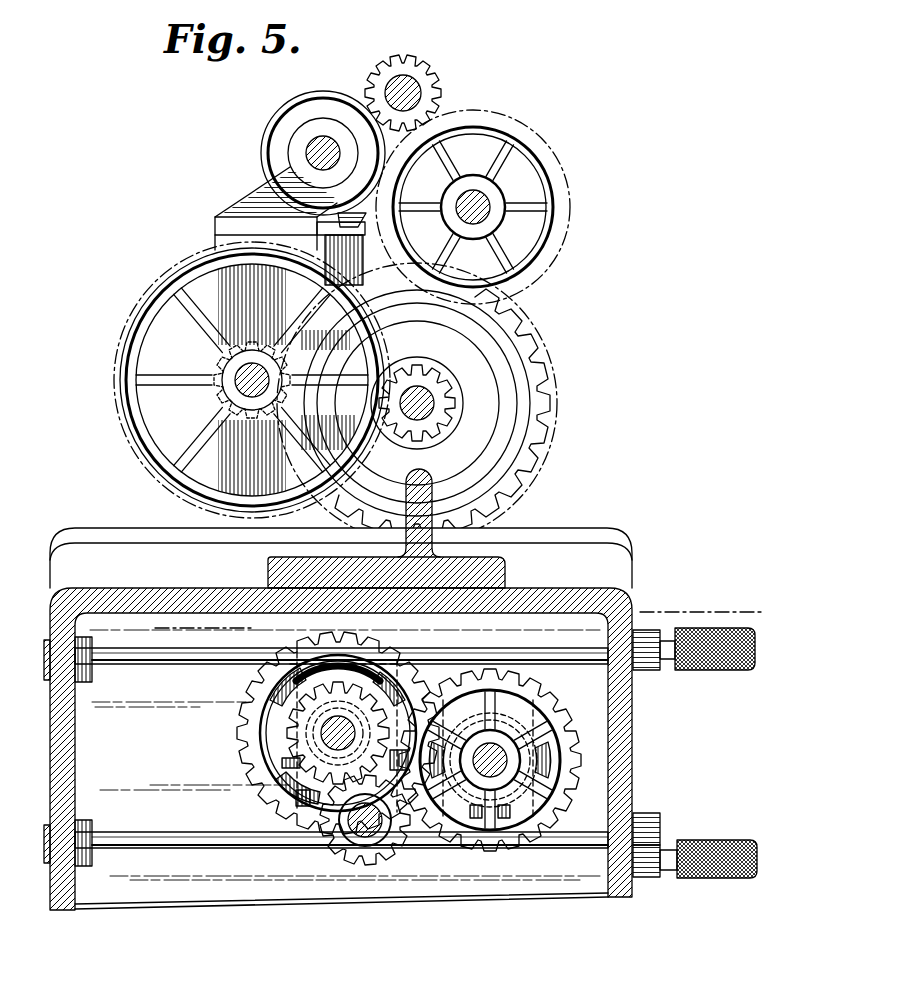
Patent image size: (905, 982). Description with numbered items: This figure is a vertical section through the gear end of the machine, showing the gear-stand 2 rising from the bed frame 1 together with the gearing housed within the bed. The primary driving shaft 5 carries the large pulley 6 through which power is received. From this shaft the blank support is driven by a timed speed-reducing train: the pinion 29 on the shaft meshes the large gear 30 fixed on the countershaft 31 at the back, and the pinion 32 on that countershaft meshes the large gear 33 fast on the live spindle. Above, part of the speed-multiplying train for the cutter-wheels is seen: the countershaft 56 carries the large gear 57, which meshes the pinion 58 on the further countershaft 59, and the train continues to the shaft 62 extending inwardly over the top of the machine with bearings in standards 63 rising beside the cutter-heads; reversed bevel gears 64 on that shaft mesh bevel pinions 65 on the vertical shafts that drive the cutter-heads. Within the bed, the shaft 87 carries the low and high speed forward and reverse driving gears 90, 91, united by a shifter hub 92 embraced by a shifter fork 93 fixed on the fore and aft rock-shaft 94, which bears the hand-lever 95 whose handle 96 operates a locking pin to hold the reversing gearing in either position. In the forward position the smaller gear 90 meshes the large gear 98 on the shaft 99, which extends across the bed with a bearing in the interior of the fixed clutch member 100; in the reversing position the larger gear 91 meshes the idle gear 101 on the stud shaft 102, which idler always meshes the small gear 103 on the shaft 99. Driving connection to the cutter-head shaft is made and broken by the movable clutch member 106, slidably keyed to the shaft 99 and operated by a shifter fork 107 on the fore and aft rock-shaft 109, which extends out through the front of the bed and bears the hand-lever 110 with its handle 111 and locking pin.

The bed frame 1 is at (600, 576).
The gear-stand 2 is at (268, 568).
The shaft 5 is at (422, 404).
The large pulley 6 is at (505, 356).
The pinion 29 is at (455, 428).
The large gear 30 is at (118, 378).
The countershaft 31 is at (248, 382).
The pinion 32 is at (215, 366).
The large gear 33 is at (536, 470).
The countershaft 56 is at (482, 202).
The large gear 57 is at (575, 208).
The pinion 58 is at (432, 82).
The countershaft 59 is at (403, 78).
The shaft 62 is at (308, 148).
The standard 63 is at (250, 200).
The reversed bevel gear 64 is at (319, 91).
The bevel pinion 65 is at (360, 224).
The shaft 87 is at (490, 778).
The low speed forward driving gear 90 is at (510, 716).
The high speed reverse driving gear 91 is at (552, 790).
The shifter hub 92 is at (515, 796).
The shifter fork 93 is at (522, 782).
The rock-shaft 94 is at (250, 852).
The hand-lever 95 is at (652, 877).
The handle 96 is at (720, 878).
The large gear 98 is at (236, 740).
The shaft 99 is at (320, 724).
The fixed clutch member 100 is at (286, 776).
The idle gear 101 is at (383, 862).
The stud shaft 102 is at (360, 832).
The small gear 103 is at (285, 764).
The movable clutch member 106 is at (300, 790).
The shifter fork 107 is at (282, 696).
The rock-shaft 109 is at (505, 650).
The hand-lever 110 is at (648, 670).
The handle 111 is at (725, 670).